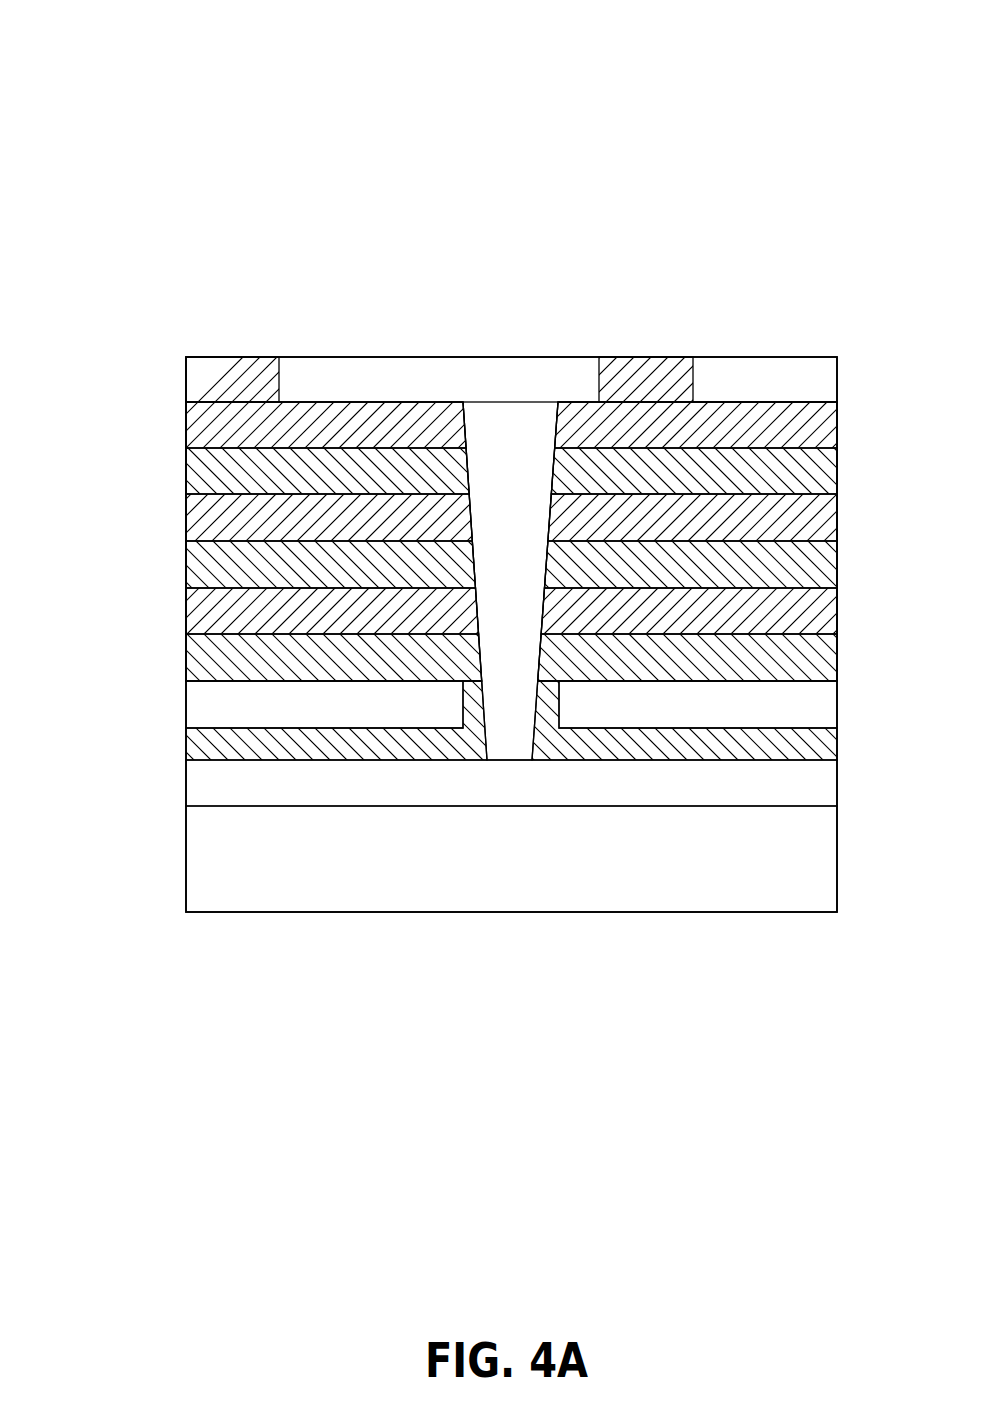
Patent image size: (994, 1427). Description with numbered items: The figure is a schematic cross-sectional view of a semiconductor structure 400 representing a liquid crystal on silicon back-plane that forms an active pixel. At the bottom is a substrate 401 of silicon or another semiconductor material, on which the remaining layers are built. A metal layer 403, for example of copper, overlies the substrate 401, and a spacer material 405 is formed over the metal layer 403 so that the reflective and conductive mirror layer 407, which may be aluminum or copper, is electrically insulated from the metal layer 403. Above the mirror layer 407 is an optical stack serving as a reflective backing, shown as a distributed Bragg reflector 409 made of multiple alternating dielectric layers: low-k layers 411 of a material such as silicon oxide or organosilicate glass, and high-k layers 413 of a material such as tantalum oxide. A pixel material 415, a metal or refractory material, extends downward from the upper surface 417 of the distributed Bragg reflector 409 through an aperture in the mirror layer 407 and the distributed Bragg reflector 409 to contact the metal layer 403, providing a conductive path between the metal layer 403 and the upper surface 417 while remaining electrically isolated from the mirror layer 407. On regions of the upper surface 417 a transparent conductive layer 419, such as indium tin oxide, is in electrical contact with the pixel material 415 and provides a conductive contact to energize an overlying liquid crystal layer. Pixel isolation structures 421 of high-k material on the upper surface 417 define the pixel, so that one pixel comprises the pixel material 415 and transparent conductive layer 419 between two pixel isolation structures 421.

The semiconductor structure 400 is at (94, 67).
The substrate 401 is at (186, 849).
The metal layer 403 is at (186, 781).
The spacer material 405 is at (837, 747).
The mirror layer 407 is at (837, 710).
The distributed Bragg reflector 409 is at (186, 682).
The low-k layers 411 is at (837, 480).
The high-k layers 413 is at (837, 425).
The pixel material 415 is at (507, 426).
The upper surface 417 is at (744, 398).
The transparent conductive layer 419 is at (318, 357).
The pixel isolation structures 421 is at (203, 357).